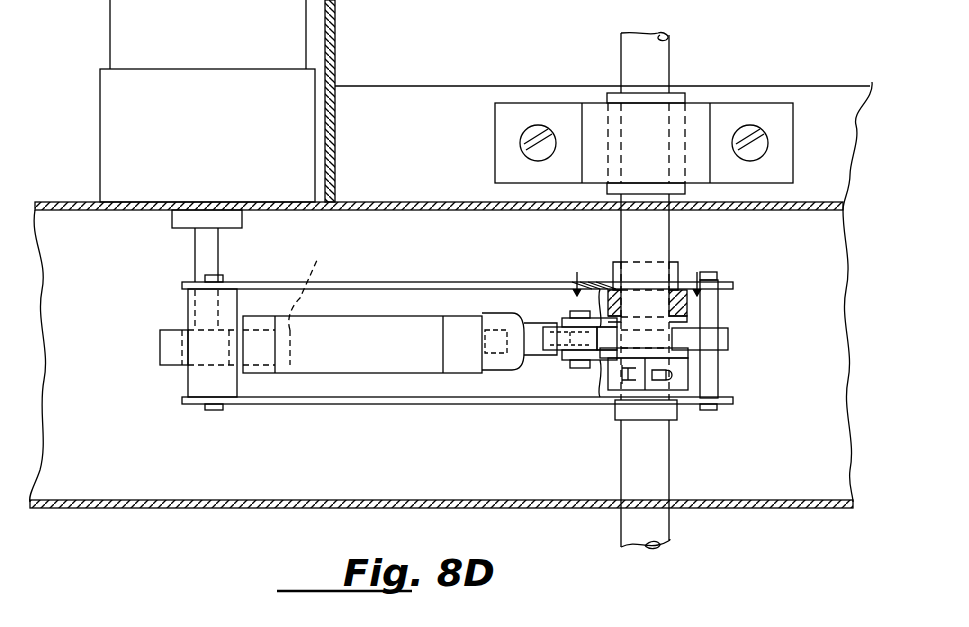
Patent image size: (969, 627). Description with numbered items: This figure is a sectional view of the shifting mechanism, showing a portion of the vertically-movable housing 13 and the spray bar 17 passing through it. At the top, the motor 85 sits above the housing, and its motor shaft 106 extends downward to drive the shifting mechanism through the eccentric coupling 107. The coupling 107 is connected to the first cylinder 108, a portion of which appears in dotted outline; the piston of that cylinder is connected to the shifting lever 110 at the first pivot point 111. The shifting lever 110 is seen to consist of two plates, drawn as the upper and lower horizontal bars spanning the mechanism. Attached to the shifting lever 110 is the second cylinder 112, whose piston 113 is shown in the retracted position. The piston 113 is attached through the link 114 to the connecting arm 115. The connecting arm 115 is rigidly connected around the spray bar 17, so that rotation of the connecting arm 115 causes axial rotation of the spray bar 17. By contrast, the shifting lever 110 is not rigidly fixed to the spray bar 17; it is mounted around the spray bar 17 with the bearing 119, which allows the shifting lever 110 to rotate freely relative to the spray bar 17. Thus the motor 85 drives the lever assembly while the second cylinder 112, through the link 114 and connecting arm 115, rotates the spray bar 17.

The motor 85 is at (137, 118).
The spray bar 17 is at (650, 528).
The vertically-movable housing 13 is at (780, 505).
The motor shaft 106 is at (207, 255).
The eccentric coupling 107 is at (207, 353).
The first cylinder 108 is at (523, 420).
The shifting lever 110 is at (390, 283).
The first pivot point 111 is at (712, 404).
The second cylinder 112 is at (395, 350).
The piston 113 is at (516, 313).
The link 114 is at (598, 370).
The connecting arm 115 is at (603, 300).
The bearing 119 is at (672, 285).